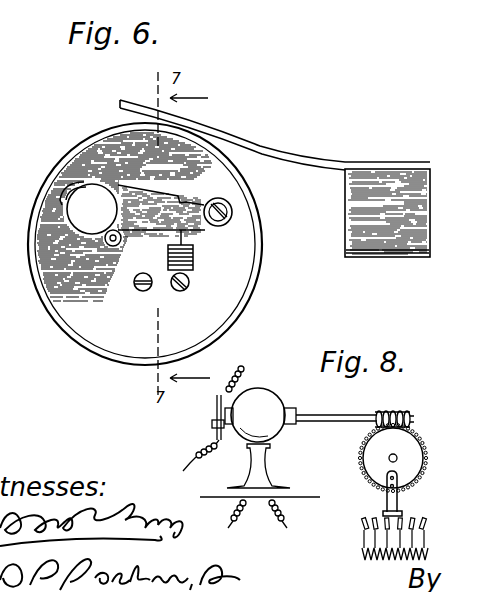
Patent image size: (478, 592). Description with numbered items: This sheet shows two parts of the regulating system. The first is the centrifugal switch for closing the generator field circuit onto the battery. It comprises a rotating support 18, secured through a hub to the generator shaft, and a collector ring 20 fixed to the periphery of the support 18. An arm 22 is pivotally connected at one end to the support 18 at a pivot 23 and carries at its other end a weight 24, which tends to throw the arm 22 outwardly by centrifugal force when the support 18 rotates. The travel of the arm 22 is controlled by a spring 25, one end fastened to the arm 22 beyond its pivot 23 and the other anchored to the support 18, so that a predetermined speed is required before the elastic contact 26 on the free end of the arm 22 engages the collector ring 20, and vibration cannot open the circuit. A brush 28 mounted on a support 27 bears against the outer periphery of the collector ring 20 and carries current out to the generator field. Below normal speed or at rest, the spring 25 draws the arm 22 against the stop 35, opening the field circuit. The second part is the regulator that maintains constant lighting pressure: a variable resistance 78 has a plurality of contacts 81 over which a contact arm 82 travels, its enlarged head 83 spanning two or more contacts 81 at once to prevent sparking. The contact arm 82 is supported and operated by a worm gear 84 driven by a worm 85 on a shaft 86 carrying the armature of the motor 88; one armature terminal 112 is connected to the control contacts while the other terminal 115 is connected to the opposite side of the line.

In FIG. 6, the support 18 is at (240, 255).
In FIG. 6, the collector ring 20 is at (36, 294).
In FIG. 6, the arm 22 is at (140, 193).
In FIG. 6, the pivot 23 is at (230, 207).
In FIG. 6, the weight 24 is at (92, 209).
In FIG. 6, the spring 25 is at (197, 262).
In FIG. 6, the elastic contact 26 is at (60, 180).
In FIG. 6, the support 27 is at (400, 248).
In FIG. 6, the brush 28 is at (250, 146).
In FIG. 6, the stop 35 is at (110, 245).
In FIG. 8, the variable resistance 78 is at (396, 560).
In FIG. 8, the contacts 81 is at (428, 519).
In FIG. 8, the contact arm 82 is at (397, 500).
In FIG. 8, the enlarged head 83 is at (385, 512).
In FIG. 8, the worm gear 84 is at (424, 456).
In FIG. 8, the worm 85 is at (398, 409).
In FIG. 8, the shaft 86 is at (336, 408).
In FIG. 8, the motor 88 is at (256, 396).
In FIG. 8, the armature terminal 112 is at (244, 364).
In FIG. 8, the armature terminal 115 is at (190, 454).